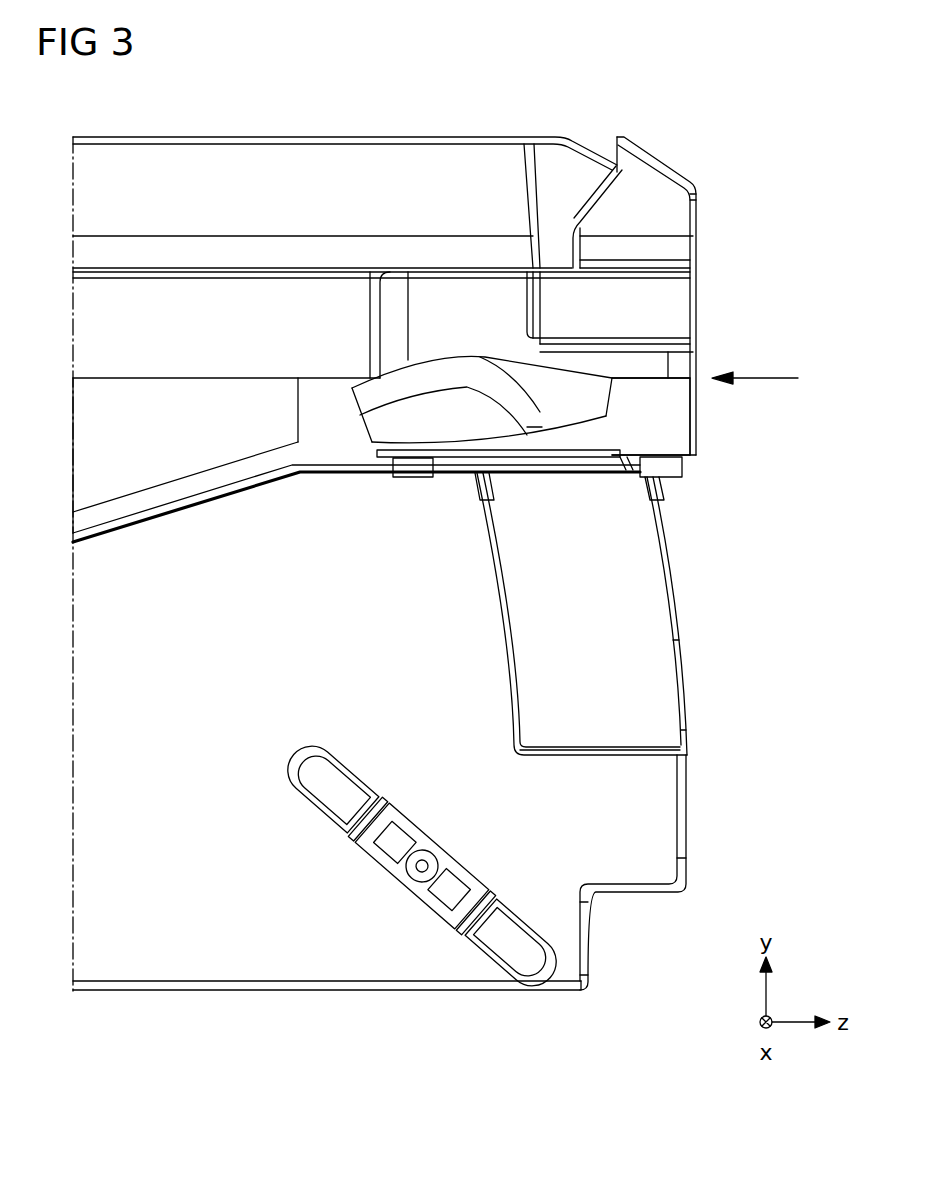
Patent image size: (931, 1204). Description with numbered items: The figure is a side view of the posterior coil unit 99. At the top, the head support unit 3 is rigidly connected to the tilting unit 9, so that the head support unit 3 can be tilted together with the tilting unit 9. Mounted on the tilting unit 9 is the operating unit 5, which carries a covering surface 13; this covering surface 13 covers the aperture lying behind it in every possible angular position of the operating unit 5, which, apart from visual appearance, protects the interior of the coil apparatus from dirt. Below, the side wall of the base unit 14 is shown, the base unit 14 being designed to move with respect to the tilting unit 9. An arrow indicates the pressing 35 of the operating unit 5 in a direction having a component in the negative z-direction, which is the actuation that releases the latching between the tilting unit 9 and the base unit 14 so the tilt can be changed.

The head support unit 3 is at (648, 190).
The covering surface 13 is at (503, 373).
The pressing 35 is at (760, 378).
The tilting unit 9 is at (690, 423).
The operating unit 5 is at (540, 412).
The base unit 14 is at (658, 818).
The posterior coil unit 99 is at (775, 598).